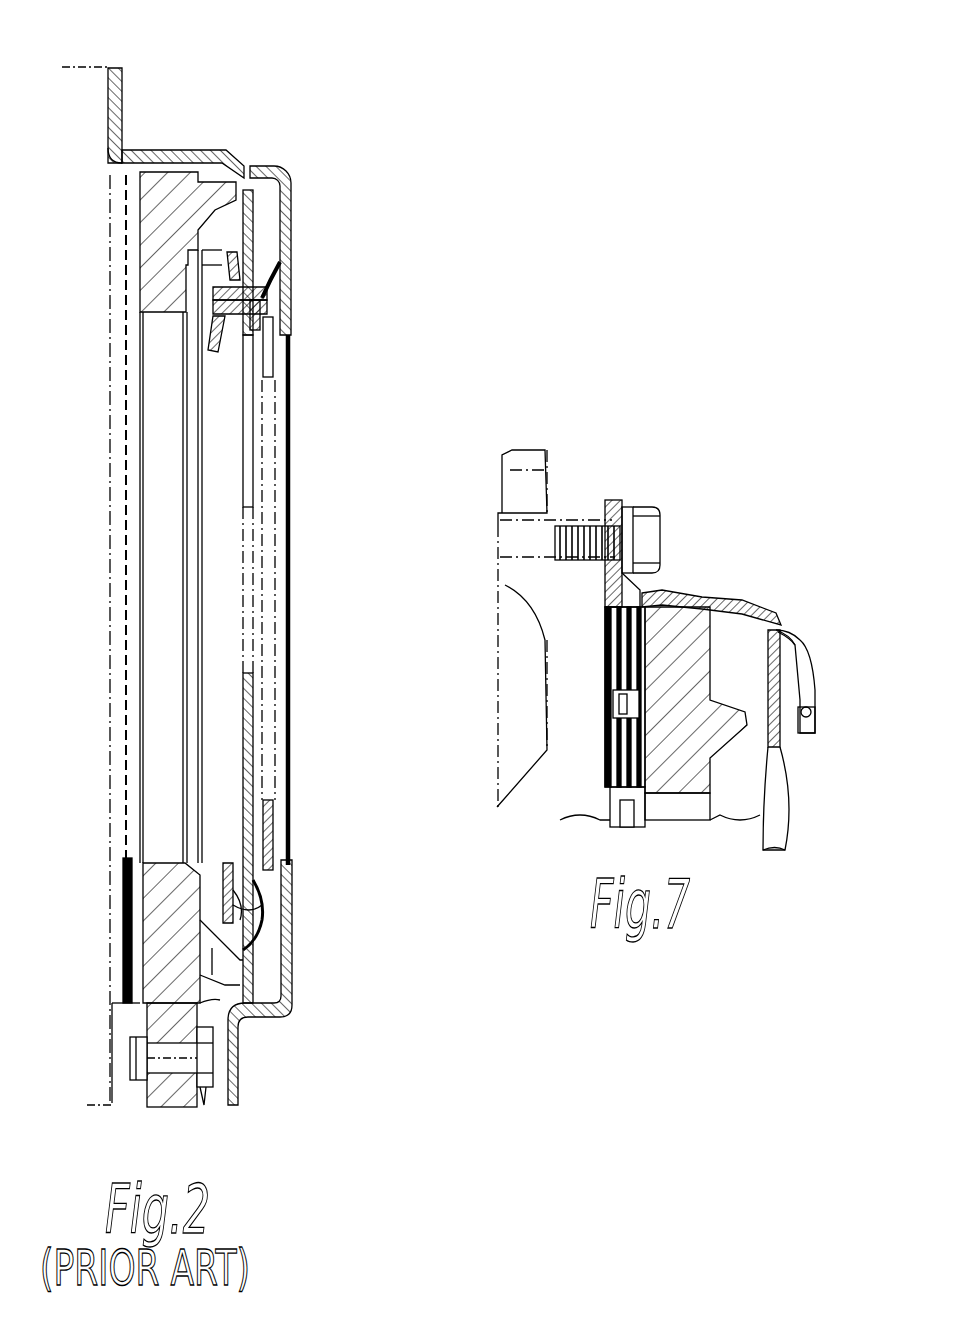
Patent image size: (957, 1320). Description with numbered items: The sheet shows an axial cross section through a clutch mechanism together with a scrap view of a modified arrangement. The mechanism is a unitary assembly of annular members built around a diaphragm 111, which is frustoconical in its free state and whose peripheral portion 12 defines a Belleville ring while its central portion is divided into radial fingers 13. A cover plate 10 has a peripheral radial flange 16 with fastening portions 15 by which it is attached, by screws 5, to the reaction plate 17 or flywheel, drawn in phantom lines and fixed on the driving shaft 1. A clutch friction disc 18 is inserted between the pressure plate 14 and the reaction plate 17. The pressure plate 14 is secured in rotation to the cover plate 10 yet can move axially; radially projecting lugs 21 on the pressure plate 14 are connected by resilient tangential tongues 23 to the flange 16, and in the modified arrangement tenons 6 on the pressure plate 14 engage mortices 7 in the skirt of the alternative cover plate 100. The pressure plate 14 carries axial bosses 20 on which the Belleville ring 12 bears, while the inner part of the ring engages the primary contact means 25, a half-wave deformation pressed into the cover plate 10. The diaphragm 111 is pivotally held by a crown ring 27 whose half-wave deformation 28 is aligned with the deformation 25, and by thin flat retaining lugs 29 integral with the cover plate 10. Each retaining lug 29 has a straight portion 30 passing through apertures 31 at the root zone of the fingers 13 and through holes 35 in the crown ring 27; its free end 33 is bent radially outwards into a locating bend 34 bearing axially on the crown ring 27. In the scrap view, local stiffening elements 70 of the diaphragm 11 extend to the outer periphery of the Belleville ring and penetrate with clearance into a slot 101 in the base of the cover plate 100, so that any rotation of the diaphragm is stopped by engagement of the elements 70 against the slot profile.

In FIG. 2, the driving shaft 1 is at (310, 591).
In FIG. 7, the screws 5 is at (648, 506).
In FIG. 7, the tenons 6 is at (700, 592).
In FIG. 7, the mortices 7 is at (652, 600).
In FIG. 2, the cover plate 10 is at (168, 152).
In FIG. 7, the diaphragm 11 is at (796, 818).
In FIG. 2, the peripheral portion 12 is at (260, 180).
In FIG. 2, the radial fingers 13 is at (255, 478).
In FIG. 2, the pressure plate 14 is at (206, 1004).
In FIG. 7, the pressure plate 14 is at (656, 735).
In FIG. 2, the fastening portions 15 is at (122, 74).
In FIG. 2, the peripheral radial flange 16 is at (128, 136).
In FIG. 2, the reaction plate 17 is at (88, 62).
In FIG. 7, the reaction plate 17 is at (540, 585).
In FIG. 2, the clutch friction disc 18 is at (128, 858).
In FIG. 7, the clutch friction disc 18 is at (604, 658).
In FIG. 2, the axial bosses 20 is at (222, 200).
In FIG. 2, the lugs 21 is at (170, 1095).
In FIG. 2, the tangential tongues 23 is at (205, 1100).
In FIG. 2, the primary contact means 25 is at (255, 930).
In FIG. 2, the crown ring 27 is at (228, 252).
In FIG. 2, the deformation 28 is at (248, 895).
In FIG. 2, the retaining lugs 29 is at (245, 345).
In FIG. 2, the straight portion 30 is at (258, 332).
In FIG. 2, the apertures 31 is at (270, 300).
In FIG. 2, the free end 33 is at (212, 295).
In FIG. 2, the locating bend 34 is at (210, 318).
In FIG. 2, the holes 35 is at (215, 325).
In FIG. 7, the local stiffening elements 70 is at (800, 650).
In FIG. 7, the cover plate 100 is at (814, 680).
In FIG. 7, the slot 101 is at (806, 715).
In FIG. 2, the diaphragm 111 is at (242, 186).